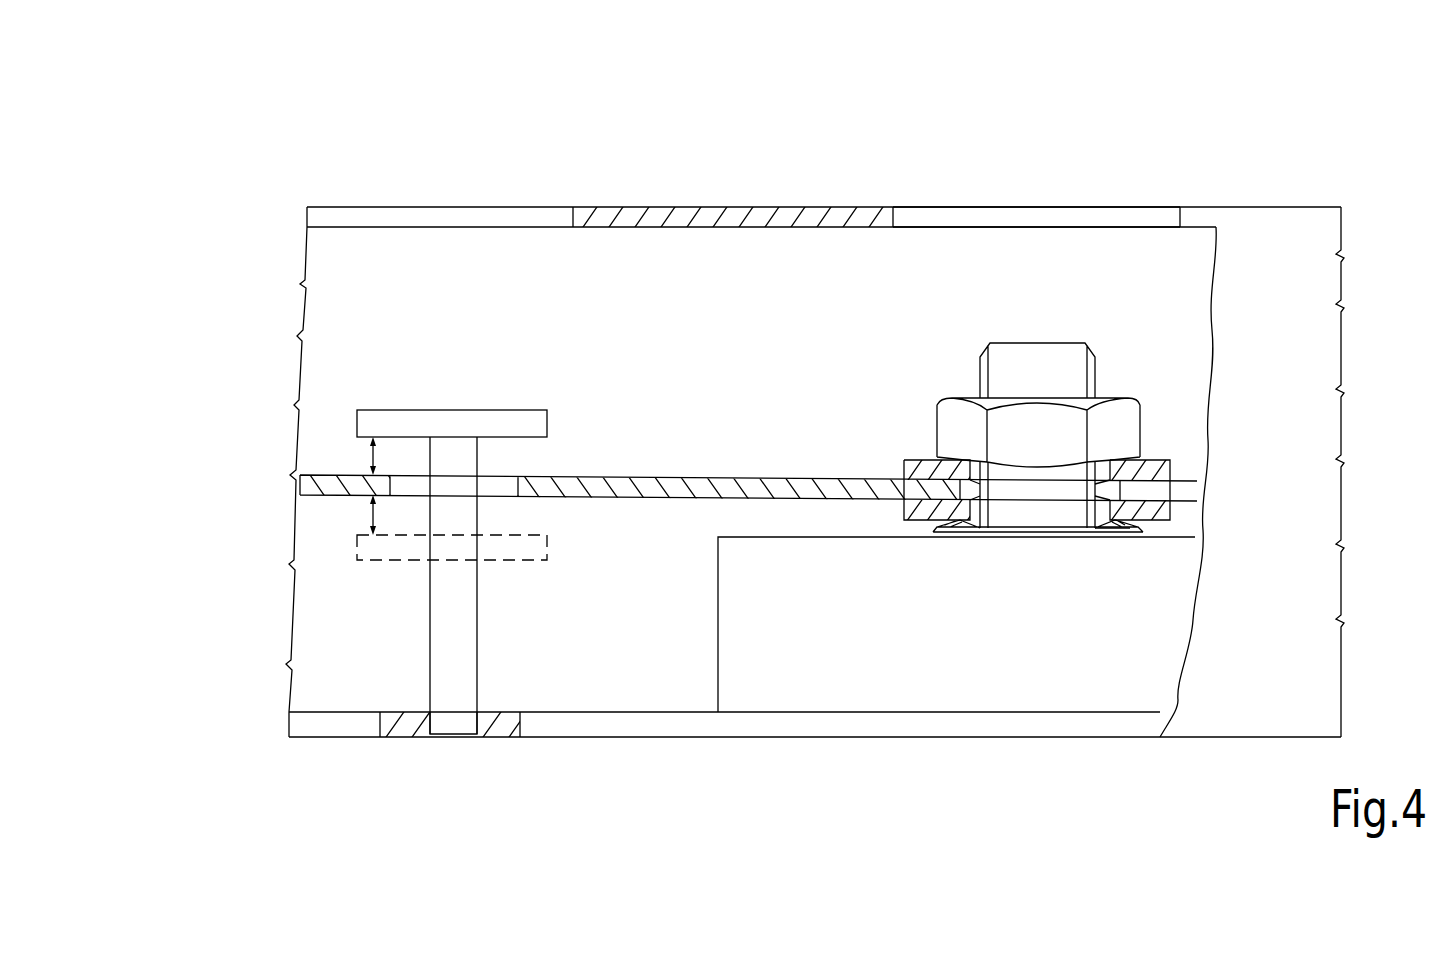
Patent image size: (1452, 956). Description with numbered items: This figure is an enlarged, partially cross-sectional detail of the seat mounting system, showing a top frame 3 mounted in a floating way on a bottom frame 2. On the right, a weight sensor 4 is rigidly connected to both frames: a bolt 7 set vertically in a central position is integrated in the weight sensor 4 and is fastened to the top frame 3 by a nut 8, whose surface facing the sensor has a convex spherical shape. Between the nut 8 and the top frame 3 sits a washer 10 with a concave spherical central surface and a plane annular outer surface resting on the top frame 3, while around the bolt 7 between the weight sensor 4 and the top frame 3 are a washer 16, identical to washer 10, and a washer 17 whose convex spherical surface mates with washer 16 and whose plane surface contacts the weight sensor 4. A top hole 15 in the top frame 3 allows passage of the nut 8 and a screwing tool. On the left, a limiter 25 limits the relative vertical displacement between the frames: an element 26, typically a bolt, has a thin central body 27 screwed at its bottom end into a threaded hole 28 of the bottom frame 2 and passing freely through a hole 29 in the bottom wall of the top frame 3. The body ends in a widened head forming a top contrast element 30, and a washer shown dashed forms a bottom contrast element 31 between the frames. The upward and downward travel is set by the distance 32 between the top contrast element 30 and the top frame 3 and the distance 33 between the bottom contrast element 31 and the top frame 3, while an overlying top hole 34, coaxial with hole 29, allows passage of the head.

The bottom frame 2 is at (415, 795).
The top frame 3 is at (824, 154).
The weight sensor 4 is at (893, 700).
The bolt 7 is at (1080, 366).
The nut 8 is at (945, 413).
The washer 10 is at (1155, 462).
The top hole 15 is at (905, 219).
The washer 16 is at (1172, 512).
The washer 17 is at (1127, 532).
The limiter 25 is at (322, 613).
The element 26 is at (566, 628).
The central body 27 is at (471, 632).
The threaded hole 28 is at (437, 726).
The hole 29 is at (511, 480).
The top contrast element 30 is at (548, 422).
The bottom contrast element 31 is at (548, 550).
The distance 32 is at (366, 455).
The distance 33 is at (368, 515).
The top hole 34 is at (566, 218).